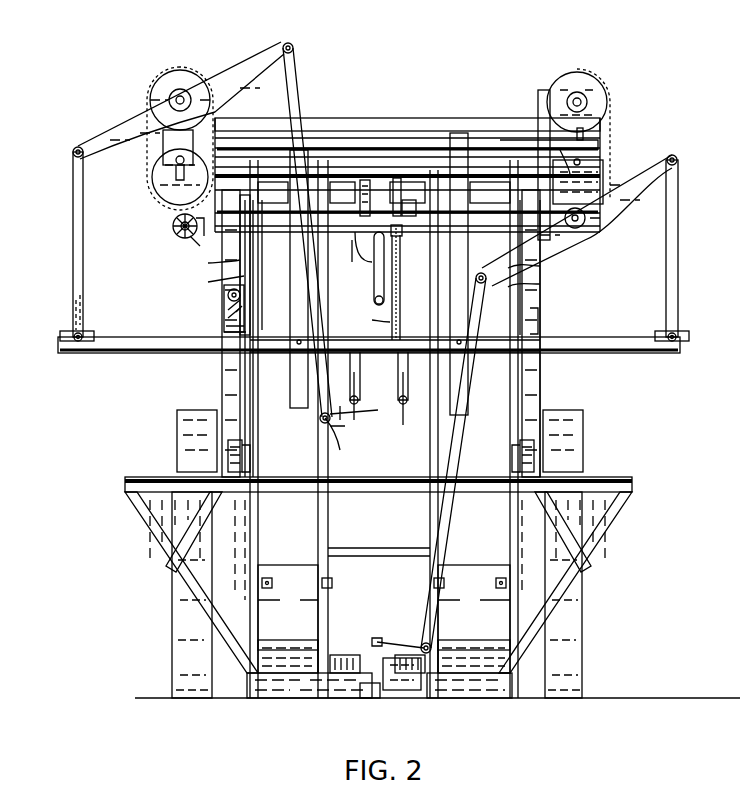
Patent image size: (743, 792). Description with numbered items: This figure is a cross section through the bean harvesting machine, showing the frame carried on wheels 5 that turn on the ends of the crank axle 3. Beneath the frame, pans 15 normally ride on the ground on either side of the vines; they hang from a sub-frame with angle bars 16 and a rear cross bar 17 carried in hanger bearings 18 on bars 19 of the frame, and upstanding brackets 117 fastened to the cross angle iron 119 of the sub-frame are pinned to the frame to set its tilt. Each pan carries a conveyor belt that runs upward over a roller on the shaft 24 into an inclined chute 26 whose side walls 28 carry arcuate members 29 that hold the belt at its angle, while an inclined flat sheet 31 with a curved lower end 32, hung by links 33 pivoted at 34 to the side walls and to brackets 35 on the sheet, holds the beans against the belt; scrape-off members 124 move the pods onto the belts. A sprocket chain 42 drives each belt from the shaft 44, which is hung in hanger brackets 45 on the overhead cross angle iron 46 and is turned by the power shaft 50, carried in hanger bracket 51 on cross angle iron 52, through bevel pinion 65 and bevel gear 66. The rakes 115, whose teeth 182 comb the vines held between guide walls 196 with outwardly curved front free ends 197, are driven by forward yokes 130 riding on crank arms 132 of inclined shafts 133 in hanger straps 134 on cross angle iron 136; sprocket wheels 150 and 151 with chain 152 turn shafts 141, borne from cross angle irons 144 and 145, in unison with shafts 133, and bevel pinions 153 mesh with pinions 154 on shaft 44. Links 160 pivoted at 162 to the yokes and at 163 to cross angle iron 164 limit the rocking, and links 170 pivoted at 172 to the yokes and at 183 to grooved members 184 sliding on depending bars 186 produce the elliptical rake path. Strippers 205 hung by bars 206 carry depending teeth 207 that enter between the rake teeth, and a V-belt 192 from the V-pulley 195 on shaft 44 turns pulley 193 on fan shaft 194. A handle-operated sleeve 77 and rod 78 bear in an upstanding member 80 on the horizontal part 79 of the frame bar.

The crank axle 3 is at (372, 554).
The wheels 5 is at (165, 635).
The pans 15 is at (275, 690).
The angle bars 16 is at (183, 578).
The rear cross bar 17 is at (244, 455).
The hanger bearings 18 is at (228, 444).
The bars 19 is at (224, 364).
The shaft 24 is at (206, 228).
The chute 26 is at (561, 283).
The side walls 28 is at (561, 300).
The arcuate members 29 is at (296, 660).
The inclined flat sheet 31 is at (310, 518).
The curved lower end 32 is at (316, 650).
The links 33 is at (316, 600).
The pivots 34 is at (258, 625).
The brackets 35 is at (268, 578).
The sprocket chain 42 is at (390, 262).
The shaft 44 is at (404, 228).
The hanger brackets 45 is at (240, 216).
The overhead cross angle iron 46 is at (408, 162).
The power shaft 50 is at (372, 286).
The hanger bracket 51 is at (354, 246).
The cross angle iron 52 is at (284, 220).
The bevel pinion 65 is at (384, 212).
The bevel gear 66 is at (360, 200).
The sleeve 77 is at (228, 288).
The rod 78 is at (230, 302).
The horizontal part 79 is at (224, 322).
The upstanding member 80 is at (240, 308).
The rakes 115 is at (330, 424).
The upstanding brackets 117 is at (222, 395).
The cross angle iron 119 is at (130, 487).
The scrape-off members 124 is at (336, 662).
The forward yoke 130 is at (262, 62).
The crank arm 132 is at (176, 161).
The shaft 133 is at (175, 208).
The hanger strap 134 is at (170, 148).
The cross angle iron 136 is at (365, 140).
The shaft 141 is at (585, 130).
The cross angle iron 144 is at (480, 118).
The cross angle iron 145 is at (500, 172).
The sprocket wheel 150 is at (162, 80).
The sprocket wheel 151 is at (165, 180).
The sprocket chain 152 is at (158, 94).
The bevel pinion 153 is at (173, 230).
The beveled pinions 154 is at (198, 244).
The link 160 is at (73, 278).
The pivot 162 is at (72, 152).
The pivot 163 is at (70, 334).
The cross angle iron 164 is at (60, 346).
The link 170 is at (290, 88).
The pivot 172 is at (287, 44).
The teeth 182 is at (330, 428).
The pivot 183 is at (300, 186).
The grooved member 184 is at (305, 155).
The depending bars 186 is at (296, 314).
The V-belt 192 is at (392, 322).
The pulley 193 is at (400, 372).
The shaft 194 is at (406, 414).
The V-pulley 195 is at (398, 200).
The guide walls 196 is at (370, 698).
The front free ends 197 is at (392, 690).
The strippers 205 is at (358, 400).
The bars 206 is at (354, 380).
The depending teeth 207 is at (348, 412).